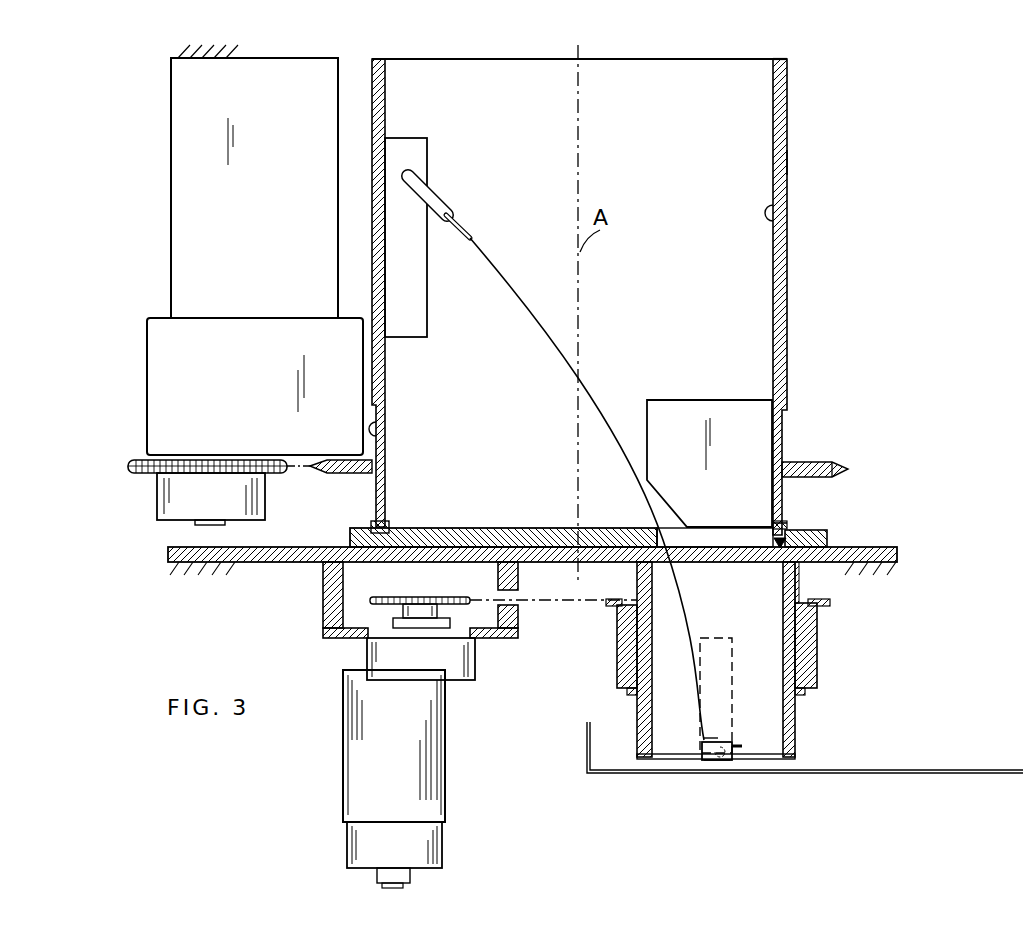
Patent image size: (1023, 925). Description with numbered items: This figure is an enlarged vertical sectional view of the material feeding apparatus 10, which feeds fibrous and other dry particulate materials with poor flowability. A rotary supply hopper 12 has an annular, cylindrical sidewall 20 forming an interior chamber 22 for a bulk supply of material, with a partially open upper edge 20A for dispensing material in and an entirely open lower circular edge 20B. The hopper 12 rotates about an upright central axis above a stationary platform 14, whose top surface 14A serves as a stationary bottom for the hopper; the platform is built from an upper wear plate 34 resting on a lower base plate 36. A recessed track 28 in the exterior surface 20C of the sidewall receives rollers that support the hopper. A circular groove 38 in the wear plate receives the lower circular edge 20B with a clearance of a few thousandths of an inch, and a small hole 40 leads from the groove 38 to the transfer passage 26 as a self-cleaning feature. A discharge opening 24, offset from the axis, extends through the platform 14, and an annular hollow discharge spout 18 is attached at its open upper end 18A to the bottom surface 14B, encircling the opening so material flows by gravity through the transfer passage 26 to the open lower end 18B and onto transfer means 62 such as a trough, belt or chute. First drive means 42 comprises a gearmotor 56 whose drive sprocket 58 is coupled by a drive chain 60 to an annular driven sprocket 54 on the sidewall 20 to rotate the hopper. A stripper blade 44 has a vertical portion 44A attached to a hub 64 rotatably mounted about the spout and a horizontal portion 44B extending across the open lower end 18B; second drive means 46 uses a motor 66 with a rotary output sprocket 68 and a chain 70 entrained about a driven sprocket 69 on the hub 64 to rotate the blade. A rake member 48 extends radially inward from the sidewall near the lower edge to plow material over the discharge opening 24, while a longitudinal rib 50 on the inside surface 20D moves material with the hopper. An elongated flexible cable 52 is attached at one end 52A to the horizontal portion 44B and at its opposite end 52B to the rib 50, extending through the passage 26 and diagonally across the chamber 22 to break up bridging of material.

The material feeding apparatus 10 is at (884, 99).
The rotary supply hopper 12 is at (616, 297).
The stationary platform 14 is at (837, 523).
The top surface 14A is at (486, 528).
The bottom surface 14B is at (556, 563).
The discharge spout 18 is at (772, 691).
The open upper end 18A is at (798, 575).
The open lower end 18B is at (791, 760).
The annular sidewall 20 is at (787, 266).
The upper edge 20A is at (787, 62).
The lower circular edge 20B is at (784, 525).
The exterior surface 20C is at (788, 163).
The inside surface 20D is at (772, 217).
The interior chamber 22 is at (704, 94).
The discharge opening 24 is at (731, 541).
The transfer passage 26 is at (673, 745).
The recessed track 28 is at (378, 428).
The upper wear plate 34 is at (789, 522).
The lower base plate 36 is at (286, 563).
The circular groove 38 is at (386, 521).
The small hole 40 is at (779, 548).
The first drive means 42 is at (132, 132).
The stripper blade 44 is at (730, 699).
The vertical portion 44A is at (716, 638).
The horizontal portion 44B is at (717, 762).
The second drive means 46 is at (386, 763).
The rake member 48 is at (716, 400).
The longitudinal rib 50 is at (416, 333).
The elongated flexible cable 52 is at (512, 293).
The one end 52A is at (712, 740).
The opposite end 52B is at (443, 203).
The driven sprocket 54 is at (808, 462).
The gearmotor 56 is at (171, 188).
The drive sprocket 58 is at (146, 474).
The drive chain 60 is at (300, 475).
The transfer means 62 is at (930, 770).
The hub 64 is at (818, 669).
The motor 66 is at (447, 775).
The rotary output sprocket 68 is at (409, 597).
The driven sprocket 69 is at (829, 608).
The chain 70 is at (575, 605).